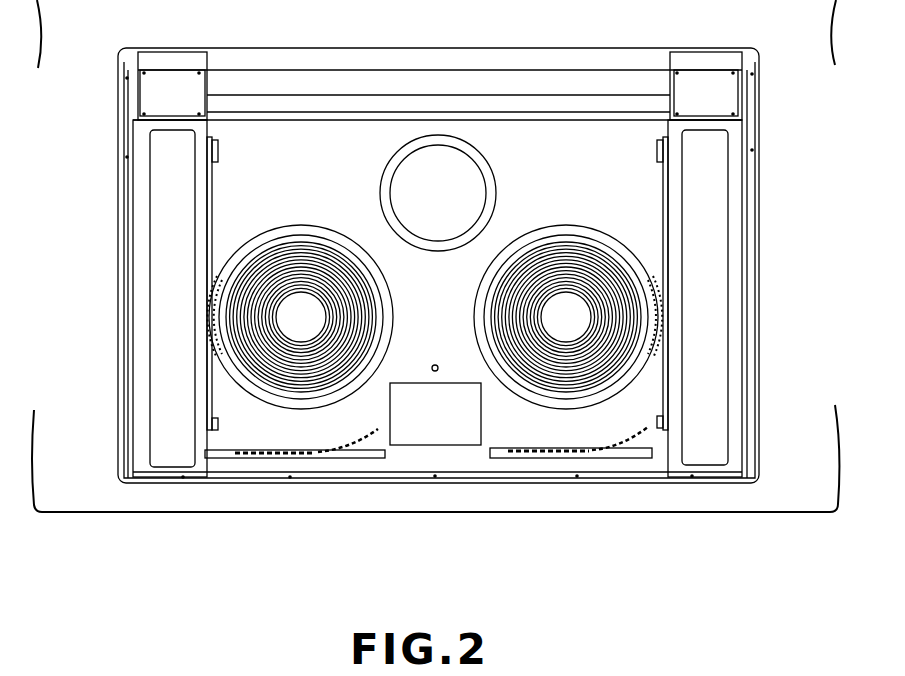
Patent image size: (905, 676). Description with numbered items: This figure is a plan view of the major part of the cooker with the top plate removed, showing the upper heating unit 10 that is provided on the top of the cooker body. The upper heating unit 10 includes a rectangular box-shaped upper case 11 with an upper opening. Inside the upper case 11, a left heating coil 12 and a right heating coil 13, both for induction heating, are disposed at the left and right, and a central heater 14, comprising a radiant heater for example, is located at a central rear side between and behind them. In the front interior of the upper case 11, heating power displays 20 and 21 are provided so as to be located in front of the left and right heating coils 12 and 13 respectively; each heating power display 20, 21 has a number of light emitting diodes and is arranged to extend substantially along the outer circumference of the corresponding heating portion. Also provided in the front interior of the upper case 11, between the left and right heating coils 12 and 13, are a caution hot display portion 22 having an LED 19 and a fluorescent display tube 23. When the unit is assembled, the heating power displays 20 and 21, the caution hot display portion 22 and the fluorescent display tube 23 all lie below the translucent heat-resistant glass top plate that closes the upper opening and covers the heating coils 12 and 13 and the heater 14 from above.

The upper heating unit 10 is at (115, 344).
The upper case 11 is at (321, 140).
The left heating coil 12 is at (293, 258).
The right heating coil 13 is at (573, 257).
The central heater 14 is at (467, 178).
The LED 19 is at (433, 366).
The heating power display 20 is at (270, 462).
The heating power display 21 is at (597, 462).
The caution hot display portion 22 is at (440, 366).
The fluorescent display tube 23 is at (452, 432).